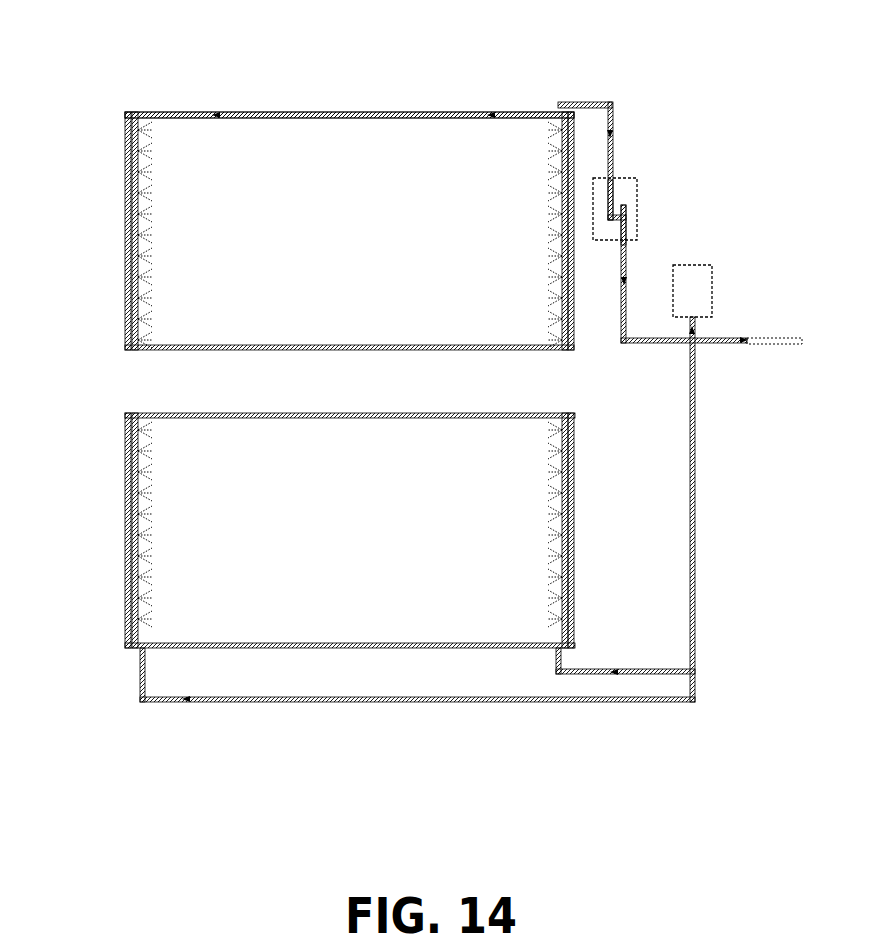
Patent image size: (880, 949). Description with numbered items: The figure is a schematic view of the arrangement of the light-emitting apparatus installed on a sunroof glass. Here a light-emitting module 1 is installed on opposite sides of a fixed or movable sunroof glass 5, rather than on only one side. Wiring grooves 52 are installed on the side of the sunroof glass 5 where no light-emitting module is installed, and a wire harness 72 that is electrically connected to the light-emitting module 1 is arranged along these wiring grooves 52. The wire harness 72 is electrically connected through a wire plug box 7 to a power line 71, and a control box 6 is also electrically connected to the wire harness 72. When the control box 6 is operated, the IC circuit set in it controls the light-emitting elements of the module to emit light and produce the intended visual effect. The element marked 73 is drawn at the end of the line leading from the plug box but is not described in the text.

The light-emitting module 1 is at (128, 197).
The sunroof glass 5 is at (384, 139).
The wiring groove 52 is at (272, 112).
The control box 6 is at (700, 284).
The wire plug box 7 is at (632, 192).
The power line 71 is at (626, 214).
The wire harness 72 is at (612, 220).
The outlet pipe 73 is at (782, 338).